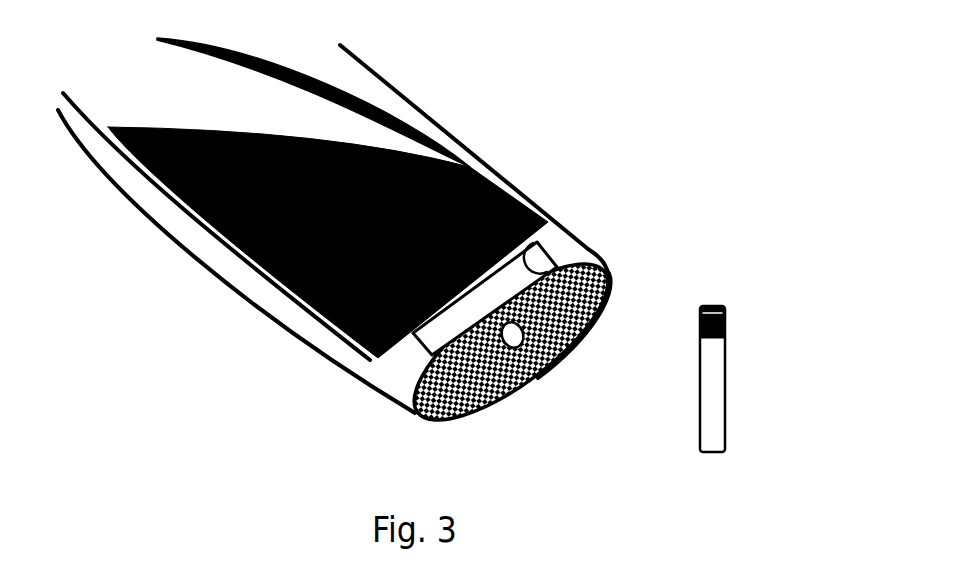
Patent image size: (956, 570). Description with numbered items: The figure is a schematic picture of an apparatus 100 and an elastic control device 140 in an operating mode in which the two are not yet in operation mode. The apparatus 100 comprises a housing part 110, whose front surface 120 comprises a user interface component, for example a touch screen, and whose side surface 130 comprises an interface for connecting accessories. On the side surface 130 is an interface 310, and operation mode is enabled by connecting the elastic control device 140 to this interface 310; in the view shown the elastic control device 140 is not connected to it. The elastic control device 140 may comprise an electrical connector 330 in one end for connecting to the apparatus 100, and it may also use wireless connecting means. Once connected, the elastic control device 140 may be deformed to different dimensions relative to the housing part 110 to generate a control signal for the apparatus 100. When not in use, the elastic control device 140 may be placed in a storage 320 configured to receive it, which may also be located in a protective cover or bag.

The apparatus 100 is at (66, 190).
The housing part 110 is at (553, 228).
The front surface 120 is at (375, 82).
The side surface 130 is at (605, 277).
The elastic control device 140 is at (725, 422).
The interface 310 is at (517, 340).
The storage 320 is at (417, 358).
The electrical connector 330 is at (725, 323).